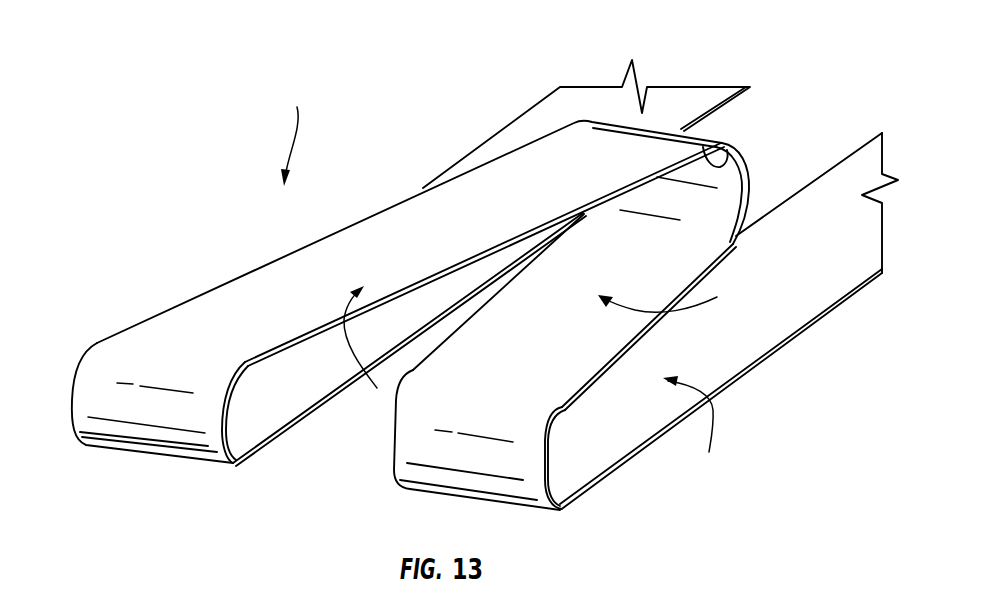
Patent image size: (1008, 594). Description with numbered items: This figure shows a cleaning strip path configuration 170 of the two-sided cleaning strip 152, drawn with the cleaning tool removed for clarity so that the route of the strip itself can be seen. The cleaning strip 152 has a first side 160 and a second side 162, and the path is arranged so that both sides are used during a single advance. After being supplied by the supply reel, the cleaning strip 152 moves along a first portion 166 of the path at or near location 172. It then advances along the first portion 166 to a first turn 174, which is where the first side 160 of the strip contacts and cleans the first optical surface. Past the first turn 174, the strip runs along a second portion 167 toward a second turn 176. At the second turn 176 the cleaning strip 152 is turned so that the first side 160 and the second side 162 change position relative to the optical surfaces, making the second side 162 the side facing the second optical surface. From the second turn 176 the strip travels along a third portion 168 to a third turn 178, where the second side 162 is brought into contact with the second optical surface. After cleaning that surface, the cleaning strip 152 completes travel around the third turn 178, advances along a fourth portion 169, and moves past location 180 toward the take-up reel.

The cleaning strip 152 is at (180, 340).
The first side 160 is at (233, 295).
The second side 162 is at (242, 440).
The first portion 166 is at (510, 140).
The second portion 167 is at (366, 356).
The third portion 168 is at (675, 297).
The fourth portion 169 is at (694, 430).
The cleaning strip path configuration 170 is at (297, 131).
The location 172 is at (586, 106).
The first turn 174 is at (62, 398).
The second turn 176 is at (748, 185).
The third turn 178 is at (549, 483).
The location 180 is at (867, 249).